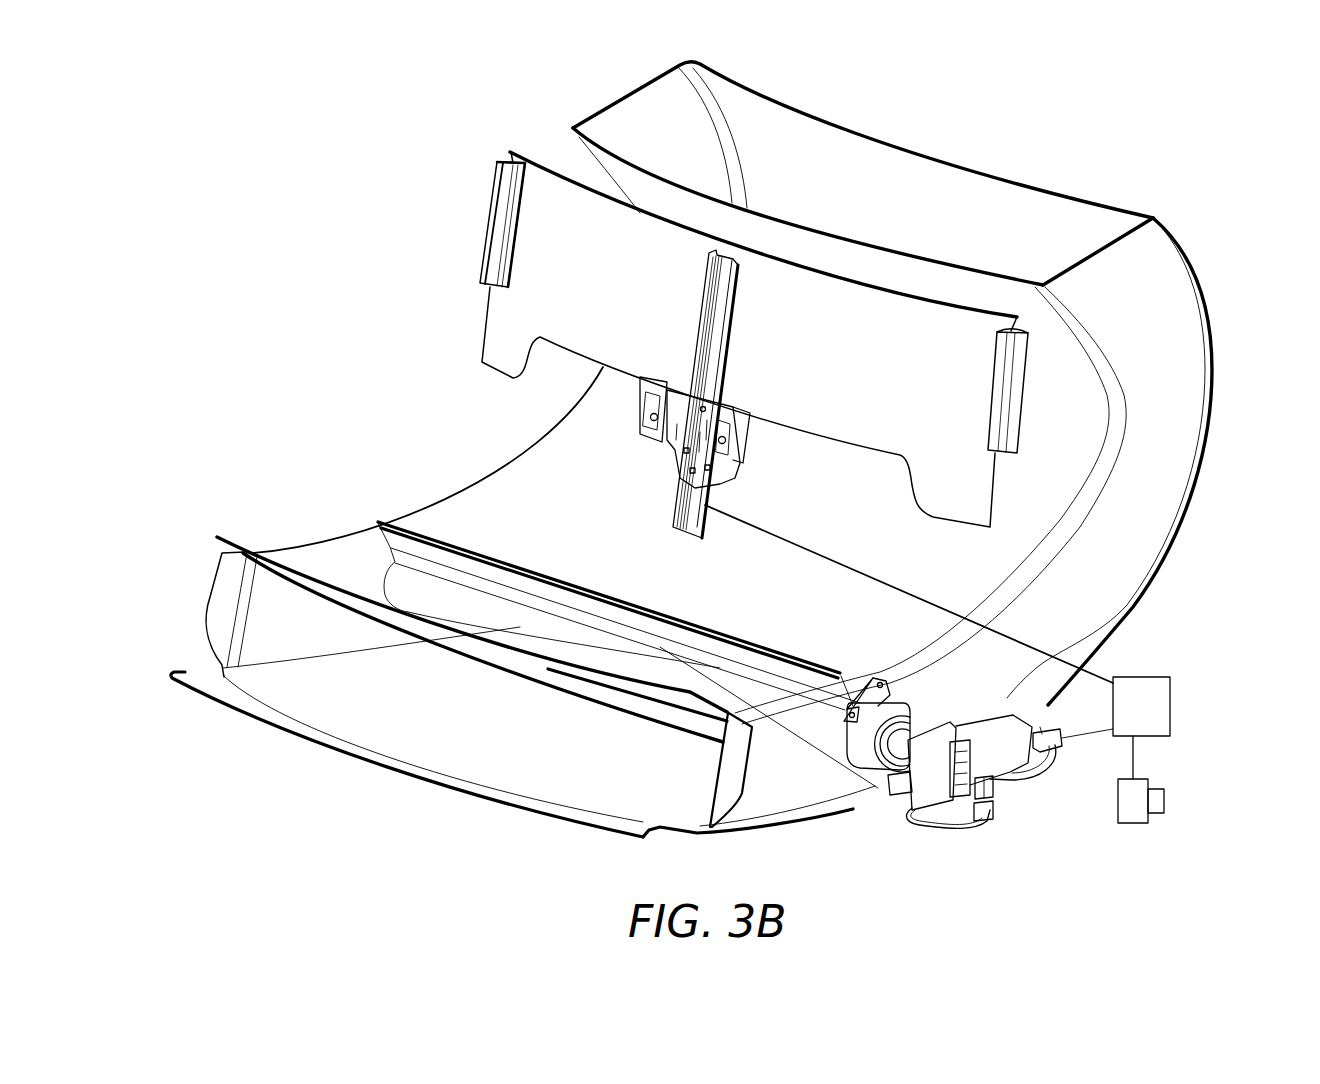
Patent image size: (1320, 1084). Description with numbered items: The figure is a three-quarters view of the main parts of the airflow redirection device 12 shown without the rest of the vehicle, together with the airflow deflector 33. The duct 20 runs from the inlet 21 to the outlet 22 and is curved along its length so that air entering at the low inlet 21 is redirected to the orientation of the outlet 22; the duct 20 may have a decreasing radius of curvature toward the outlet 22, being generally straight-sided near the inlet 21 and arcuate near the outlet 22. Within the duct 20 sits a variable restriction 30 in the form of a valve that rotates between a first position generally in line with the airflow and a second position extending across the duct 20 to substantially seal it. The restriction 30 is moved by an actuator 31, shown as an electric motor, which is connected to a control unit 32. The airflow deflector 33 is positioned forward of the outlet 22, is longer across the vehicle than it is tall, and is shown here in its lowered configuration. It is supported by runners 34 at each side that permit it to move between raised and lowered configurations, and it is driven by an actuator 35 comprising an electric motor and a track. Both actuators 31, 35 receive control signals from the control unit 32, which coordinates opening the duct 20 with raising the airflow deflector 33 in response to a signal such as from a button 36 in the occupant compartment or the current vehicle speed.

The airflow redirection device 12 is at (277, 747).
The duct 20 is at (798, 805).
The inlet 21 is at (450, 748).
The outlet 22 is at (873, 180).
The variable restriction 30 is at (392, 543).
The actuator 31 is at (933, 780).
The control unit 32 is at (1172, 690).
The airflow deflector 33 is at (493, 343).
The runners 34 is at (490, 222).
The actuator 35 is at (672, 447).
The button 36 is at (1133, 825).